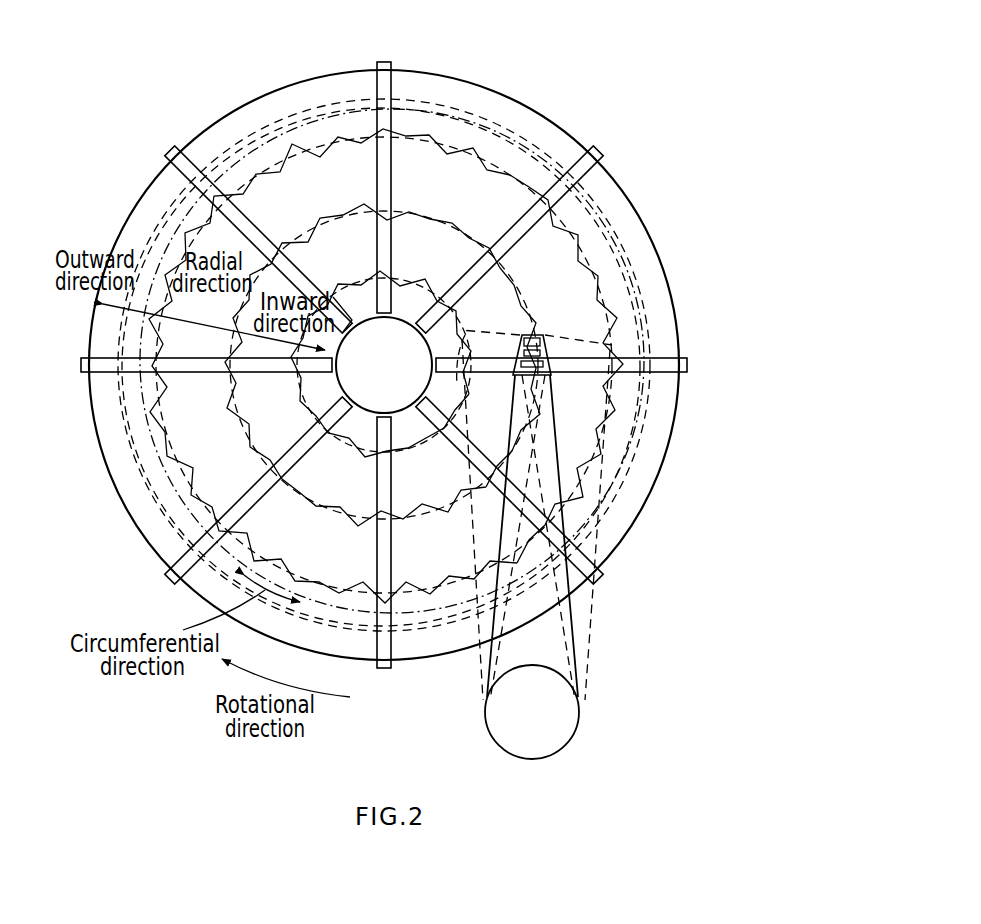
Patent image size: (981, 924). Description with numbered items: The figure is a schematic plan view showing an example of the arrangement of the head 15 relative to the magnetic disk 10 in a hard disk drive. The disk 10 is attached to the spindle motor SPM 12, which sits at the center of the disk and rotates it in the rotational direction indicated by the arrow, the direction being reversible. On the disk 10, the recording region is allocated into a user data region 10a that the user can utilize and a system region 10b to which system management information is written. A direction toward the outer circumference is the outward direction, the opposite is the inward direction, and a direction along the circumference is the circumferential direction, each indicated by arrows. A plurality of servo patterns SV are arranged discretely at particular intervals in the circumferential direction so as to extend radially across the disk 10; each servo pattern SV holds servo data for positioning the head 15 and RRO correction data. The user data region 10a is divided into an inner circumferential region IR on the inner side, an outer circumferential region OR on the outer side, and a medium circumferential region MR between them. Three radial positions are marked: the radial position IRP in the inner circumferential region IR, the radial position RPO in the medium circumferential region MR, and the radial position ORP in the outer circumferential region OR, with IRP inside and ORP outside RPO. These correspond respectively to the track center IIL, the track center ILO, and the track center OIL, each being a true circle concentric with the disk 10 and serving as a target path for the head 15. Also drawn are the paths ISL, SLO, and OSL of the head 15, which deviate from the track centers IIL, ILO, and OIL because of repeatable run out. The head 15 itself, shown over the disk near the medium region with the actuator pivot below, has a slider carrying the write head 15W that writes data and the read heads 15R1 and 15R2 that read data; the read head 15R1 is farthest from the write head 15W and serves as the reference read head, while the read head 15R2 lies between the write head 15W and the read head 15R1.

The magnetic disk 10 is at (665, 274).
The user data region 10a is at (262, 150).
The system region 10b is at (660, 470).
The spindle motor 12 is at (407, 318).
The head 15 is at (522, 357).
The write head 15W is at (538, 338).
The read head 15R1 is at (548, 373).
The read head 15R2 is at (635, 351).
The servo pattern SV is at (388, 62).
The spindle motor SPM is at (384, 365).
The medium circumferential region MR is at (413, 190).
The outer circumferential region OR is at (457, 138).
The path of the head SLO is at (505, 170).
The track center ILO is at (545, 175).
The track center OIL is at (577, 242).
The path of the head OSL is at (607, 280).
The track center IIL is at (330, 253).
The inner circumferential region IR is at (368, 268).
The path of the head ISL is at (318, 248).
The radial position IRP is at (476, 336).
The radial position RPO is at (532, 333).
The radial position ORP is at (620, 346).